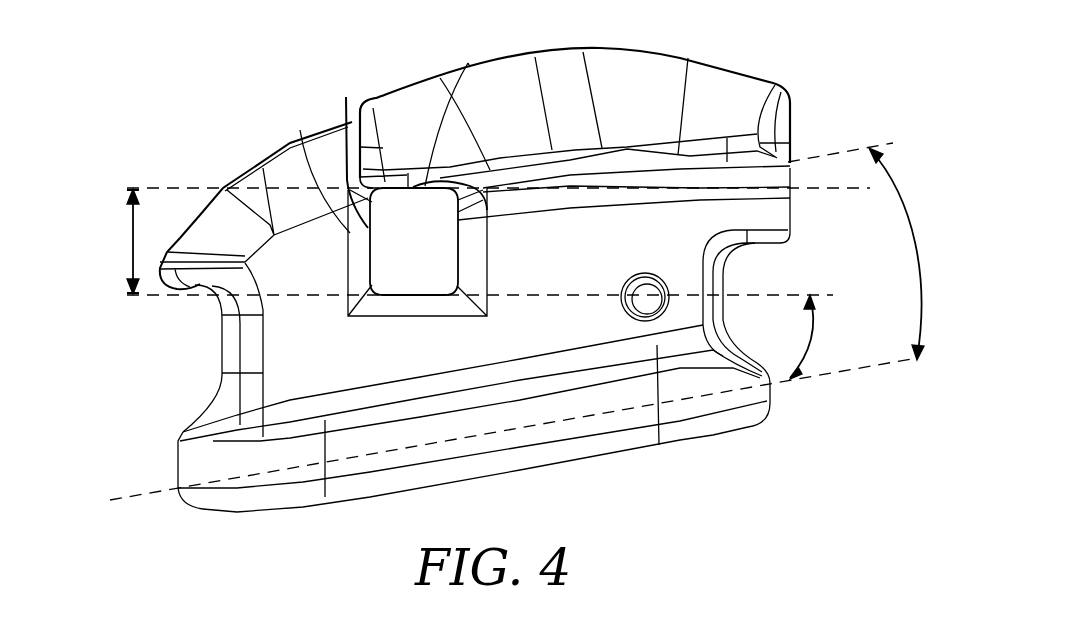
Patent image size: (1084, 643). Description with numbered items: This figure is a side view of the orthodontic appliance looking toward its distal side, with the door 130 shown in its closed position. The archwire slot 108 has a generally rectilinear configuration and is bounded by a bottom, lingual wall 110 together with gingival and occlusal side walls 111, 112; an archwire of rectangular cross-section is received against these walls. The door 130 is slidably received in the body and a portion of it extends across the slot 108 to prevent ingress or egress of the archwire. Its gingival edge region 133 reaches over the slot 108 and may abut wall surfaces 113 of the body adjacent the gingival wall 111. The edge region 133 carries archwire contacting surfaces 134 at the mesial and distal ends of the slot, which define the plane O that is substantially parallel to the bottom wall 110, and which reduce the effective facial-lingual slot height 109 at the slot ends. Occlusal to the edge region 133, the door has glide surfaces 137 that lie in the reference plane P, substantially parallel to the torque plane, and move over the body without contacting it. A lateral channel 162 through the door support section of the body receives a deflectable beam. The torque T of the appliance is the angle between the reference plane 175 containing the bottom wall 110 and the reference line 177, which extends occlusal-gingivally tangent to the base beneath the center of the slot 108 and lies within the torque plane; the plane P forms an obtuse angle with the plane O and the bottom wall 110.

The archwire slot 108 is at (393, 238).
The slot height 109 is at (132, 238).
The bottom wall 110 is at (415, 297).
The gingival side wall 111 is at (298, 135).
The occlusal side wall 112 is at (460, 245).
The wall surfaces 113 is at (345, 118).
The door 130 is at (658, 63).
The gingival edge region 133 is at (371, 104).
The archwire contacting surfaces 134 is at (388, 188).
The glide surfaces 137 is at (793, 157).
The lateral channel 162 is at (647, 298).
The reference plane 175 is at (170, 297).
The reference line 177 is at (130, 497).
The reference plane P is at (873, 142).
The angle X is at (905, 210).
The plane O is at (840, 188).
The torque angle T is at (813, 333).